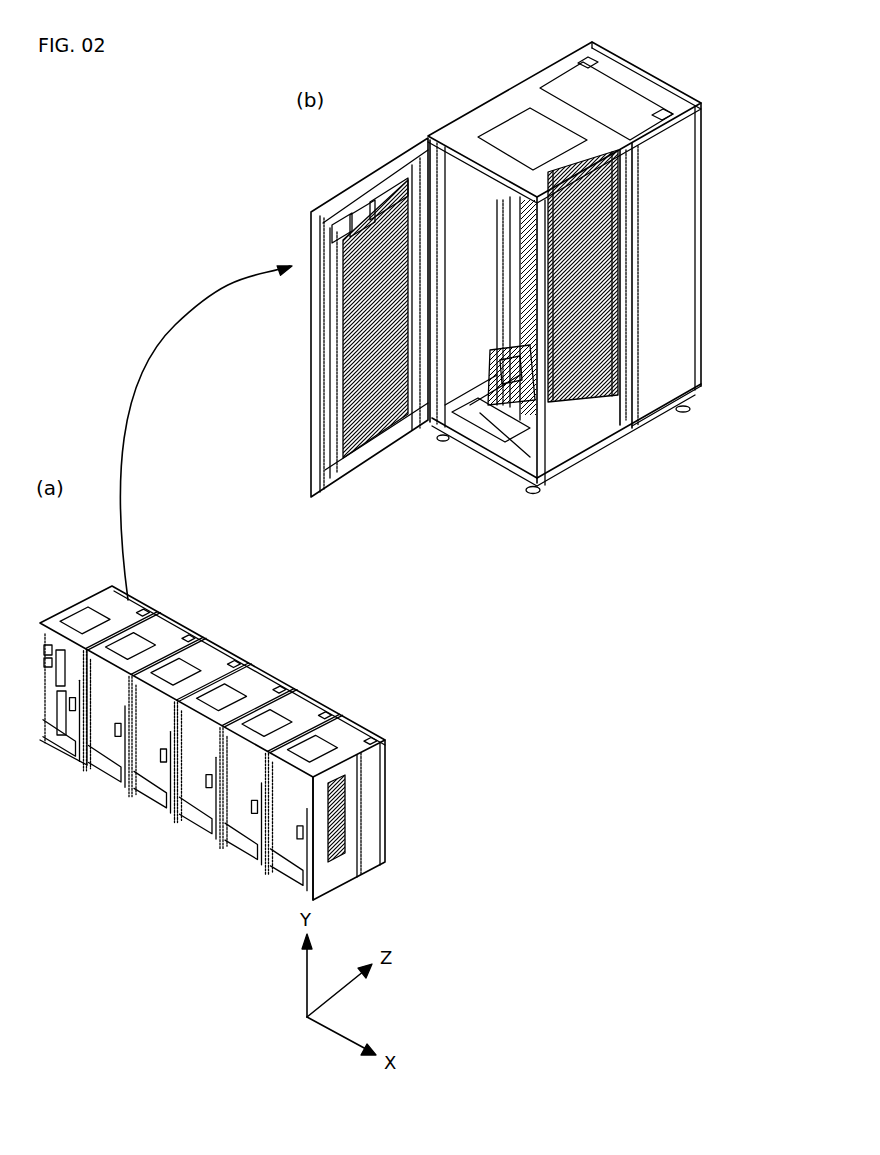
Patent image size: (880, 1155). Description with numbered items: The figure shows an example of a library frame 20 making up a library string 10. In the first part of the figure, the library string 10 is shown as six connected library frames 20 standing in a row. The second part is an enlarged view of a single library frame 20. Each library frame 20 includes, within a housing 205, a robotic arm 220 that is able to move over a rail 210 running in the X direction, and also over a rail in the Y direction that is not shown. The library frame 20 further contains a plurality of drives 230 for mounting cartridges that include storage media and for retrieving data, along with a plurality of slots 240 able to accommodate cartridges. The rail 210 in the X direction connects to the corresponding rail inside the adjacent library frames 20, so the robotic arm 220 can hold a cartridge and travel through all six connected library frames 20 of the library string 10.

The library string 10 is at (141, 858).
The library frame 20 is at (432, 55).
The housing 205 is at (675, 222).
The rail 210 is at (612, 432).
The robotic arm 220 is at (492, 410).
The drives 230 is at (627, 245).
The slots 240 is at (340, 376).